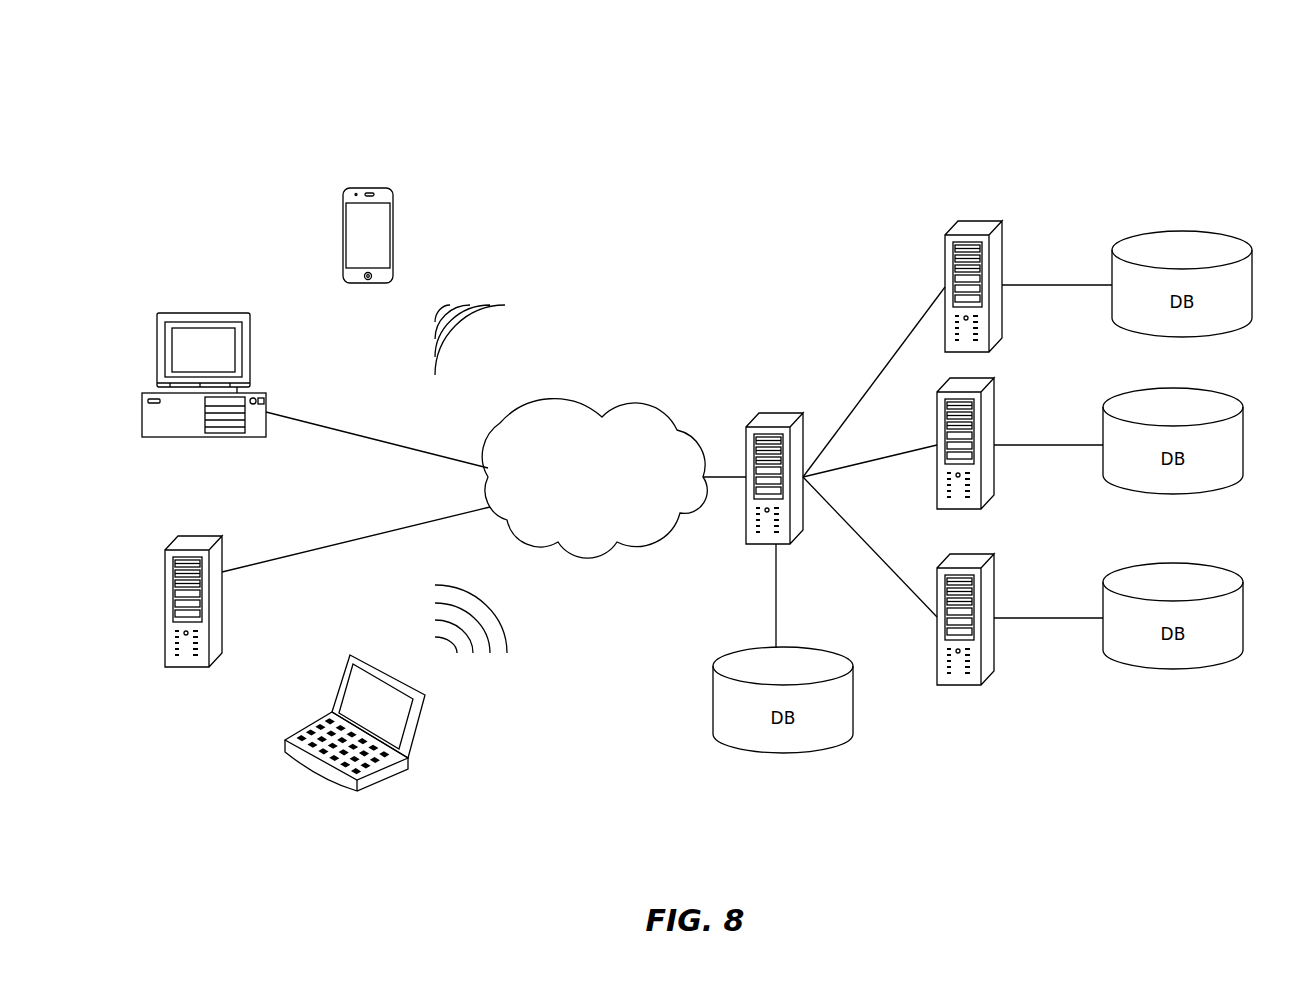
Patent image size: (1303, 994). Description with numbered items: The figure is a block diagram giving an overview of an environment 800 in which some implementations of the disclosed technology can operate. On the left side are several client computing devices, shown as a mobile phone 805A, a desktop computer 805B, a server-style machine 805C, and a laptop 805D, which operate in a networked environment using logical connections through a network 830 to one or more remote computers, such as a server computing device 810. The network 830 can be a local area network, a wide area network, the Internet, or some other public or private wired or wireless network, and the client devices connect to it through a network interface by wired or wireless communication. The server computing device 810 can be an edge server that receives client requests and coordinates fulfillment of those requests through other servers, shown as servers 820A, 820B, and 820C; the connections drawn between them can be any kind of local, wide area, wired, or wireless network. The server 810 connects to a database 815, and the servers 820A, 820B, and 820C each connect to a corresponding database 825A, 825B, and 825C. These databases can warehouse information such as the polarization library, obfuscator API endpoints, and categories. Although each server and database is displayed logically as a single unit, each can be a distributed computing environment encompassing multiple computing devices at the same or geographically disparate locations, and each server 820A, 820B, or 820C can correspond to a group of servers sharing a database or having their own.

The environment 800 is at (1058, 105).
The client computing device 805A is at (380, 188).
The client computing device 805B is at (240, 315).
The client computing device 805C is at (217, 532).
The client computing device 805D is at (422, 727).
The network 830 is at (648, 403).
The server computing device 810 is at (787, 411).
The database 815 is at (833, 650).
The server 820A is at (1007, 221).
The server 820B is at (999, 378).
The server 820C is at (999, 554).
The database 825A is at (1180, 231).
The database 825B is at (1172, 389).
The database 825C is at (1170, 565).